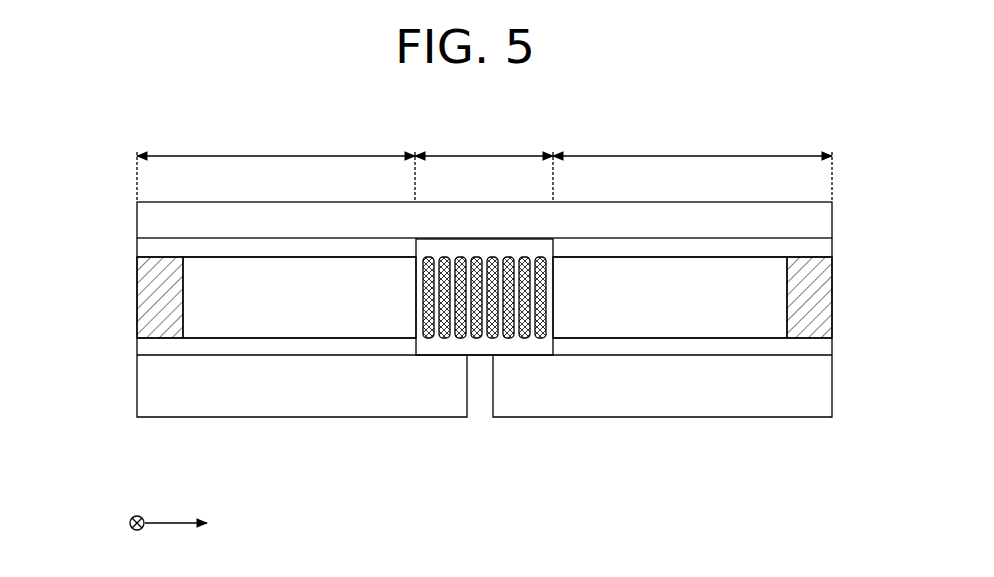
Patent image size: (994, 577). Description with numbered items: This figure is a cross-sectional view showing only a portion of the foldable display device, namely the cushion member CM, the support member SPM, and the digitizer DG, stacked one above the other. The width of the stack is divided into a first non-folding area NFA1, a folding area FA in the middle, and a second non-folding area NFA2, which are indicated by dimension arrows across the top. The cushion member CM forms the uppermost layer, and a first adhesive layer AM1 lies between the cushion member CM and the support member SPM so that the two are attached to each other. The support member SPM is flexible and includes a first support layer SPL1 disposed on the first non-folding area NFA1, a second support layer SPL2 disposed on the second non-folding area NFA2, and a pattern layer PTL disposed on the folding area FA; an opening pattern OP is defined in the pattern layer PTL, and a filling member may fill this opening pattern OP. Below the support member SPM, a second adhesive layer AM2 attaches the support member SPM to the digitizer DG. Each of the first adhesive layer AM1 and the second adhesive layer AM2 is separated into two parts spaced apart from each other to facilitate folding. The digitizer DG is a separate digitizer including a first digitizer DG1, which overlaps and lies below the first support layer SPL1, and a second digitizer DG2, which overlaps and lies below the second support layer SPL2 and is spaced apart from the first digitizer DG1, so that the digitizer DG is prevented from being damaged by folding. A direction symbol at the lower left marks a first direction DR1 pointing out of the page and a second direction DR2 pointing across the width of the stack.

The cushion member CM is at (137, 220).
The first adhesive layer AM1 is at (137, 248).
The support member SPM is at (137, 293).
The second adhesive layer AM2 is at (137, 350).
The digitizer DG is at (137, 392).
The first digitizer DG1 is at (261, 397).
The second digitizer DG2 is at (629, 397).
The first support layer SPL1 is at (349, 307).
The second support layer SPL2 is at (720, 307).
The pattern layer PTL is at (437, 345).
The opening pattern OP is at (470, 345).
The first non-folding area NFA1 is at (276, 165).
The folding area FA is at (484, 165).
The second non-folding area NFA2 is at (692, 165).
The first direction DR1 is at (136, 539).
The second direction DR2 is at (200, 523).